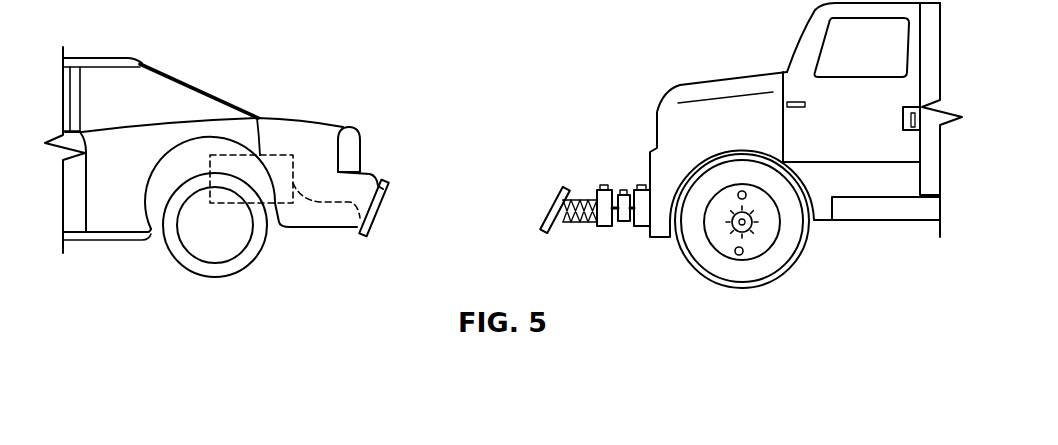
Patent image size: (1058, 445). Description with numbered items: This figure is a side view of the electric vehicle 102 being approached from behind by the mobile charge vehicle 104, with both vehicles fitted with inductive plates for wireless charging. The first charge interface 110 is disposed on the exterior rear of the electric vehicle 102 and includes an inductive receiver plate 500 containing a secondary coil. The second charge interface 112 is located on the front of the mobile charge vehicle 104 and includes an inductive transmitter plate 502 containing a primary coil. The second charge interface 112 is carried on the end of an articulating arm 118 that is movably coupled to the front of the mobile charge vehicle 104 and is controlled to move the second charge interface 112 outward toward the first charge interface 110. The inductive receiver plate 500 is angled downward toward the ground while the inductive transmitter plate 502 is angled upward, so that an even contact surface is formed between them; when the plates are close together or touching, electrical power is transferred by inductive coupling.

The electric vehicle 102 is at (205, 88).
The mobile charge vehicle 104 is at (803, 43).
The first charge interface 110 is at (370, 231).
The second charge interface 112 is at (553, 189).
The articulating arm 118 is at (623, 193).
The inductive receiver plate 500 is at (381, 203).
The inductive transmitter plate 502 is at (548, 207).